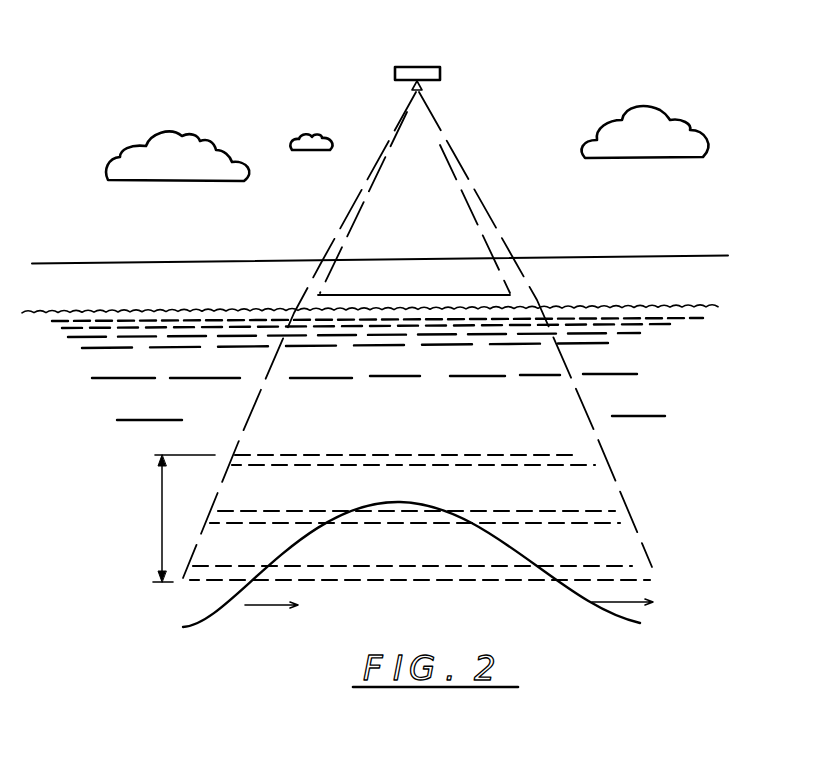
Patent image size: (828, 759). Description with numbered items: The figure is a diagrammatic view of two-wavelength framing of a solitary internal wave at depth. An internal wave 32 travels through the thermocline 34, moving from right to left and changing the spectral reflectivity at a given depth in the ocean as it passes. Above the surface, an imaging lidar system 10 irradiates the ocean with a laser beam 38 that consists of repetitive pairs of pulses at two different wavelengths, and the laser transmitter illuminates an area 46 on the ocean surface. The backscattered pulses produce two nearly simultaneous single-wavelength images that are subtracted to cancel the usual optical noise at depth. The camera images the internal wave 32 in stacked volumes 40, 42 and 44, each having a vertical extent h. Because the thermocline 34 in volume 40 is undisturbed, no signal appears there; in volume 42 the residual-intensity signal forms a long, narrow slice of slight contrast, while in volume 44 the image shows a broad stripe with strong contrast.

The imaging lidar system 10 is at (441, 74).
The laser beam 38 is at (432, 198).
The area on the ocean surface 46 is at (378, 296).
The volume 40 is at (594, 458).
The volume 42 is at (608, 513).
The volume 44 is at (627, 573).
The thermocline 34 is at (456, 497).
The internal wave 32 is at (568, 593).